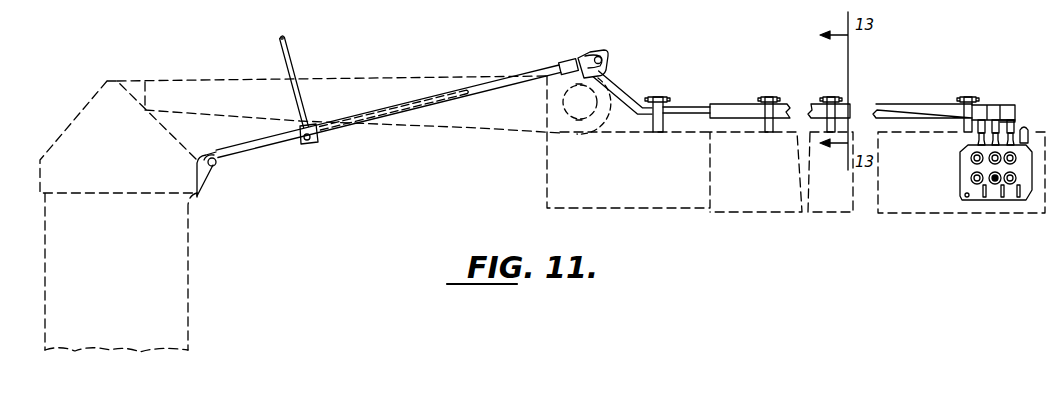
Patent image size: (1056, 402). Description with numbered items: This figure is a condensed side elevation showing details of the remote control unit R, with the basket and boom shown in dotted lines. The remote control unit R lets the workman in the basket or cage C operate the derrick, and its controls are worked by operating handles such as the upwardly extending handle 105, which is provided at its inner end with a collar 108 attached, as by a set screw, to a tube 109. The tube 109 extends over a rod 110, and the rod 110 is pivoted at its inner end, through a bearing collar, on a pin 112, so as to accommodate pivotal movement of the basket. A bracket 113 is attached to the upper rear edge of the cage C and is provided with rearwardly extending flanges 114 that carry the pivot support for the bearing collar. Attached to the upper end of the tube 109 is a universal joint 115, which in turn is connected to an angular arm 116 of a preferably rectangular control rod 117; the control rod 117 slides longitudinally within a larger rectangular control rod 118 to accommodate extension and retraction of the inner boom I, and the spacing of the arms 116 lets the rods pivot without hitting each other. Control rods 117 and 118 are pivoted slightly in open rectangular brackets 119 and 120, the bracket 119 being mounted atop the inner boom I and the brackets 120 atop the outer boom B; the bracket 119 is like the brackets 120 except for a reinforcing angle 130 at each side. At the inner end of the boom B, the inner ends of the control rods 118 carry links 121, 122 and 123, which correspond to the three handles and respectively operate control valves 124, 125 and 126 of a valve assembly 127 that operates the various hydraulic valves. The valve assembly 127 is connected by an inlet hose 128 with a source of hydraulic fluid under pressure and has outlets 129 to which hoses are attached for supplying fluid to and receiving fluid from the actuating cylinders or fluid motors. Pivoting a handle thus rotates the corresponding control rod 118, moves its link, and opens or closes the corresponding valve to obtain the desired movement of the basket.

The operating handle 105 is at (283, 37).
The collar 108 is at (313, 145).
The tube 109 is at (474, 97).
The rod 110 is at (263, 154).
The pin 112 is at (216, 165).
The bracket 113 is at (204, 194).
The flanges 114 is at (205, 170).
The universal joint 115 is at (607, 58).
The angular arm 116 is at (628, 94).
The control rod 117 is at (686, 105).
The control rod 118 is at (728, 104).
The bracket 119 is at (663, 98).
The bracket 120 is at (770, 97).
The link 121 is at (988, 107).
The link 122 is at (1015, 109).
The link 123 is at (976, 128).
The control valve 124 is at (992, 142).
The control valve 125 is at (1020, 165).
The control valve 126 is at (977, 141).
The valve assembly 127 is at (1018, 186).
The inlet hose 128 is at (1029, 128).
The outlets 129 is at (978, 184).
The reinforcing angle 130 is at (647, 115).
The remote control unit R is at (485, 82).
The basket or cage C is at (170, 298).
The inner boom I is at (630, 196).
The outer boom B is at (904, 198).